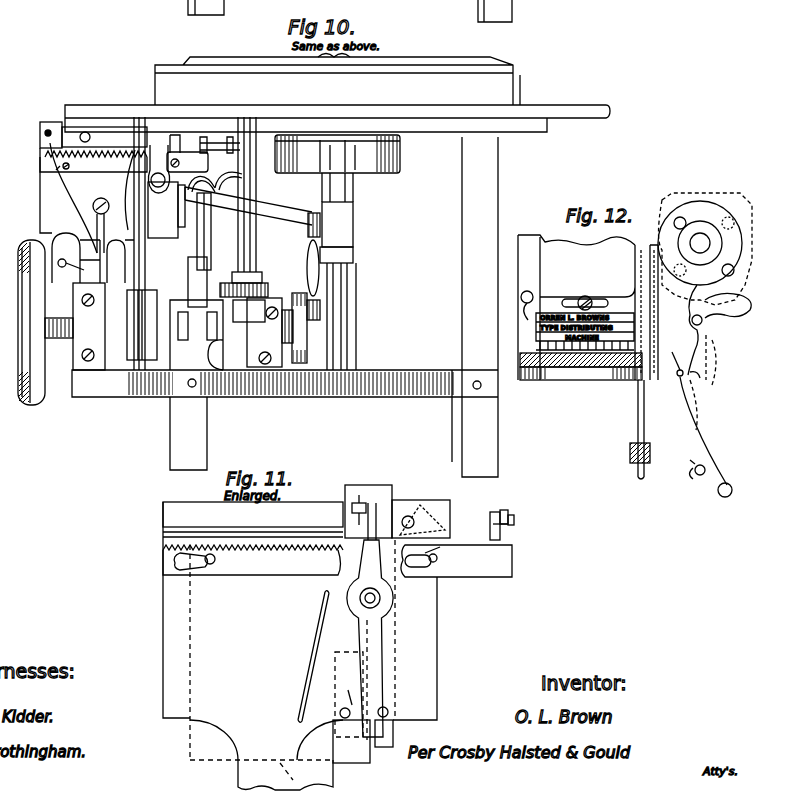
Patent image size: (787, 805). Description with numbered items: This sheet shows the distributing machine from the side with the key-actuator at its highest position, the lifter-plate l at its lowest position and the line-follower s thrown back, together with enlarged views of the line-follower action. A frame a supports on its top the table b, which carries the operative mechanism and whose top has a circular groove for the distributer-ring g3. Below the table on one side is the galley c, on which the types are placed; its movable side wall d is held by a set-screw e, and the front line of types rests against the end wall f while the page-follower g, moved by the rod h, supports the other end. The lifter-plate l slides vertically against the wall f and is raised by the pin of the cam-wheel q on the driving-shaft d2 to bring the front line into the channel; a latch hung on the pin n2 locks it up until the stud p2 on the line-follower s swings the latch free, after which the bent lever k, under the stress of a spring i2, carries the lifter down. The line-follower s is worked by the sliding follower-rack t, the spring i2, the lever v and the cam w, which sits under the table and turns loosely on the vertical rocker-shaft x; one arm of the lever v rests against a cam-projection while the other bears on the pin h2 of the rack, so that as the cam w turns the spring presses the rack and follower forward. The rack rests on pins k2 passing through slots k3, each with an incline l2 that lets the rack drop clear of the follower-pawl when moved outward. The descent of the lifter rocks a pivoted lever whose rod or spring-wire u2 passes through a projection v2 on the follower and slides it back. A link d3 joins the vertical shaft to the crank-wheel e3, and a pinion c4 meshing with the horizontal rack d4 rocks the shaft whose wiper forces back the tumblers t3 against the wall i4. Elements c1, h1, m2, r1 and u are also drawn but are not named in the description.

In FIG. 10, the frame a is at (285, 307).
In FIG. 10, the table b is at (337, 119).
In FIG. 10, the galley c is at (104, 132).
In FIG. 12, the galley c is at (599, 312).
In FIG. 10, the case plate c1 is at (197, 282).
In FIG. 12, the case plate c1 is at (696, 374).
In FIG. 10, the pinion c4 is at (249, 304).
In FIG. 12, the side wall d is at (576, 307).
In FIG. 10, the driving-shaft d2 is at (45, 322).
In FIG. 10, the link d3 is at (310, 266).
In FIG. 10, the horizontal rack d4 is at (219, 243).
In FIG. 12, the set-screw e is at (526, 300).
In FIG. 10, the crank-wheel e3 is at (307, 328).
In FIG. 12, the end wall f is at (581, 357).
In FIG. 12, the page-follower g is at (579, 304).
In FIG. 10, the distributer-ring g3 is at (506, 90).
In FIG. 12, the rod h is at (640, 429).
In FIG. 10, the screw h1 is at (67, 162).
In FIG. 12, the pin h2 is at (673, 358).
In FIG. 11, the pin h2 is at (194, 557).
In FIG. 10, the spring i2 is at (71, 259).
In FIG. 11, the spring i2 is at (494, 525).
In FIG. 10, the wall i4 is at (337, 252).
In FIG. 10, the right-angle lever k is at (151, 187).
In FIG. 10, the pins k2 is at (187, 162).
In FIG. 11, the pins k2 is at (456, 561).
In FIG. 10, the slots k3 is at (163, 210).
In FIG. 11, the slots k3 is at (422, 555).
In FIG. 10, the lifter-plate l is at (98, 259).
In FIG. 11, the lifter-plate l is at (385, 670).
In FIG. 11, the incline l2 is at (221, 559).
In FIG. 11, the rod m2 is at (318, 660).
In FIG. 11, the pin n2 is at (371, 621).
In FIG. 11, the stud p2 is at (399, 519).
In FIG. 10, the cam-wheel q is at (142, 325).
In FIG. 11, the guide r1 is at (361, 694).
In FIG. 11, the line-follower s is at (367, 510).
In FIG. 10, the follower-rack t is at (93, 161).
In FIG. 12, the follower-rack t is at (581, 375).
In FIG. 11, the follower-rack t is at (253, 555).
In FIG. 10, the tumblers t3 is at (348, 316).
In FIG. 11, the pin u is at (357, 510).
In FIG. 10, the rod or spring-wire u2 is at (95, 225).
In FIG. 12, the lever v is at (719, 357).
In FIG. 11, the lever v is at (522, 518).
In FIG. 10, the projection v2 is at (59, 187).
In FIG. 12, the projection v2 is at (706, 437).
In FIG. 12, the cam w is at (705, 249).
In FIG. 10, the rocker-shaft x is at (204, 231).